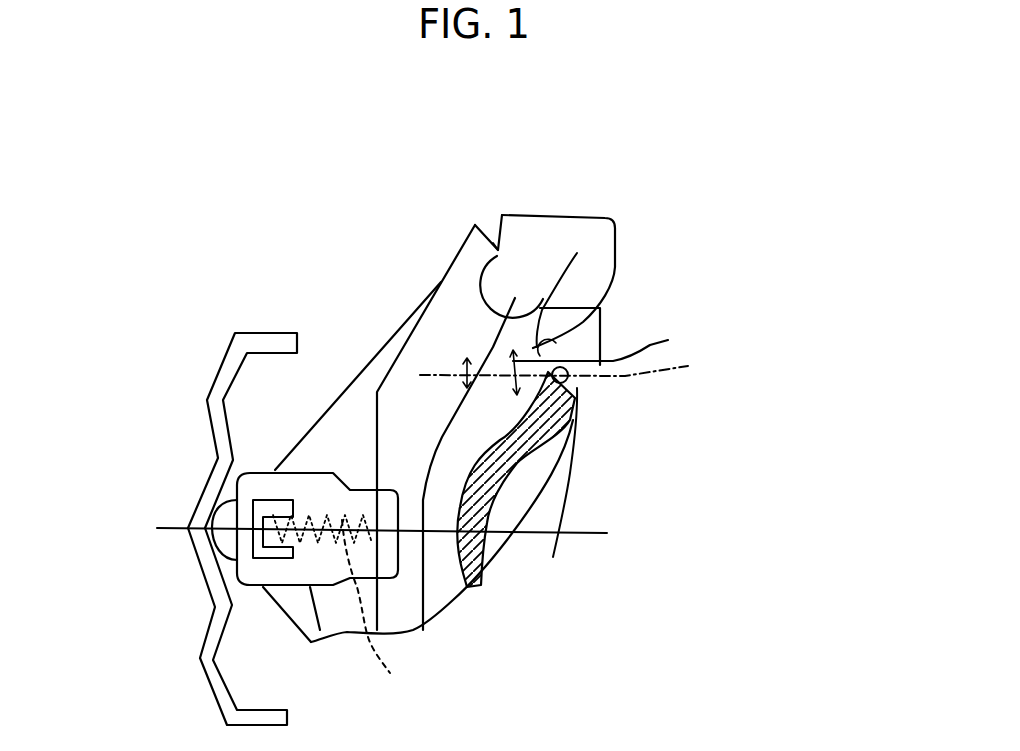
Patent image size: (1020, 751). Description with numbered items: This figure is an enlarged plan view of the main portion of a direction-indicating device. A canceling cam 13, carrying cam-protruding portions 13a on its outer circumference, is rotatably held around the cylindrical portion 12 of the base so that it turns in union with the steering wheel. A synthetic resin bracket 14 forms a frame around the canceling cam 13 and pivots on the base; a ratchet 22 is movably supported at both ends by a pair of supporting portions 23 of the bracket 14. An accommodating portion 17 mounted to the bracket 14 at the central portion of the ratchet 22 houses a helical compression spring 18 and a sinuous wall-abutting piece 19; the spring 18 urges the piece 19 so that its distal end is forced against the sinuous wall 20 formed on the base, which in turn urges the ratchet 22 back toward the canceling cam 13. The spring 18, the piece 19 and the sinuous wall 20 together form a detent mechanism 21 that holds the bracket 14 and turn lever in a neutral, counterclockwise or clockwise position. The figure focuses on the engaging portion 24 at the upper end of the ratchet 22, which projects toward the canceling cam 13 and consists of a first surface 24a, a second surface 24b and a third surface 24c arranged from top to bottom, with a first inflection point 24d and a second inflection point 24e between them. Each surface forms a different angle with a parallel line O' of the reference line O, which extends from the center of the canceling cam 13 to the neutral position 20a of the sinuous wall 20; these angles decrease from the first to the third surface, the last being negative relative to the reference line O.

The cylindrical portion 12 is at (492, 548).
The canceling cam 13 is at (453, 590).
The cam-protruding portions 13a is at (580, 407).
The bracket 14 is at (577, 220).
The accommodating portion 17 is at (327, 640).
The helical compression spring 18 is at (376, 611).
The sinuous wall-abutting piece 19 is at (243, 562).
The sinuous wall 20 is at (210, 430).
The neutral position 20a is at (228, 505).
The detent mechanism 21 is at (190, 572).
The ratchet 22 is at (377, 410).
The supporting portions 23 is at (490, 243).
The engaging portion 24 is at (483, 340).
The first surface 24a is at (590, 308).
The second surface 24b is at (568, 378).
The third surface 24c is at (472, 385).
The first inflection point 24d is at (571, 290).
The second inflection point 24e is at (512, 287).
The reference line O is at (362, 507).
The parallel line O' is at (569, 353).